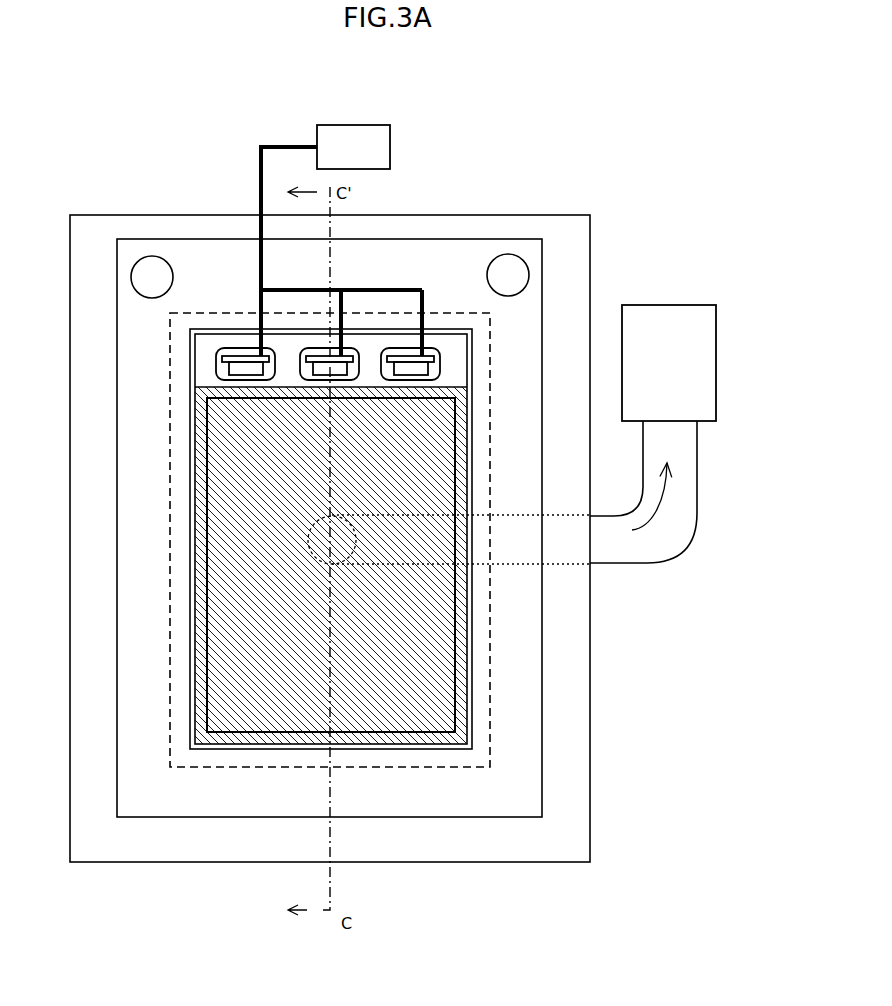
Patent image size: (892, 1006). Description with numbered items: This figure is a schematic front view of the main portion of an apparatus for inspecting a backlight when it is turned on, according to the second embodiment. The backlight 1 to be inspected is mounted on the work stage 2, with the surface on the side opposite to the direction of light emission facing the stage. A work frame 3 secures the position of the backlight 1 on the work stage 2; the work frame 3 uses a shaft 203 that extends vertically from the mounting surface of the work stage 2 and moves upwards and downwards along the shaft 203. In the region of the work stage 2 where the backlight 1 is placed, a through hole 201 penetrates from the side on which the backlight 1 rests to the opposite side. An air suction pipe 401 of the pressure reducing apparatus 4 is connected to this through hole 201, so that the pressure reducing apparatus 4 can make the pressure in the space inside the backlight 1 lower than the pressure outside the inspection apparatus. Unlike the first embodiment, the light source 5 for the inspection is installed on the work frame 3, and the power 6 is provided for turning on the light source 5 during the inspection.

The backlight 1 is at (472, 691).
The work stage 2 is at (473, 862).
The work frame 3 is at (215, 817).
The pressure reducing apparatus 4 is at (667, 323).
The air suction pipe 401 is at (668, 441).
The light source 5 is at (245, 365).
The power 6 is at (353, 147).
The through hole 201 is at (339, 564).
The shaft 203 is at (152, 275).